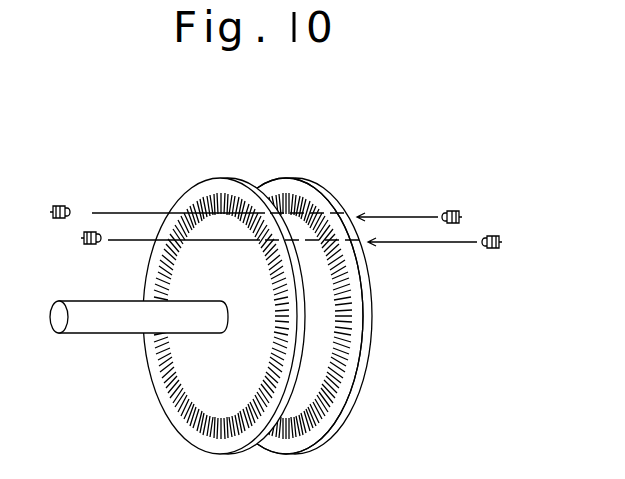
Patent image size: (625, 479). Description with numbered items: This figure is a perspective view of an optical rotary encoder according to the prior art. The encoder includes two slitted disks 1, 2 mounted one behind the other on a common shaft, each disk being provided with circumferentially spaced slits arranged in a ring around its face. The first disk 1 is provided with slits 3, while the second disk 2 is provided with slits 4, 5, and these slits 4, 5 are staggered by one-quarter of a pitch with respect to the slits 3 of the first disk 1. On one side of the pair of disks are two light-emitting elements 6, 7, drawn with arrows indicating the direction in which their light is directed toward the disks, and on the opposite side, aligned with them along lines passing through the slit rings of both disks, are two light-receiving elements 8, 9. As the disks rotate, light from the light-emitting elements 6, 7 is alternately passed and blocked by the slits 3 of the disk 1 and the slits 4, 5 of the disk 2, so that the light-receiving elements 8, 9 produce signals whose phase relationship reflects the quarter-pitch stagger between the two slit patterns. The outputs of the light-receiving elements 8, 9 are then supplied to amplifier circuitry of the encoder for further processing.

The slitted disk 1 is at (163, 403).
The slitted disk 2 is at (345, 412).
The slits 3 is at (208, 188).
The slits 4 is at (295, 183).
The slits 5 is at (352, 275).
The light-emitting element 6 is at (463, 210).
The light-emitting element 7 is at (498, 248).
The light-receiving element 8 is at (63, 205).
The light-receiving element 9 is at (82, 243).